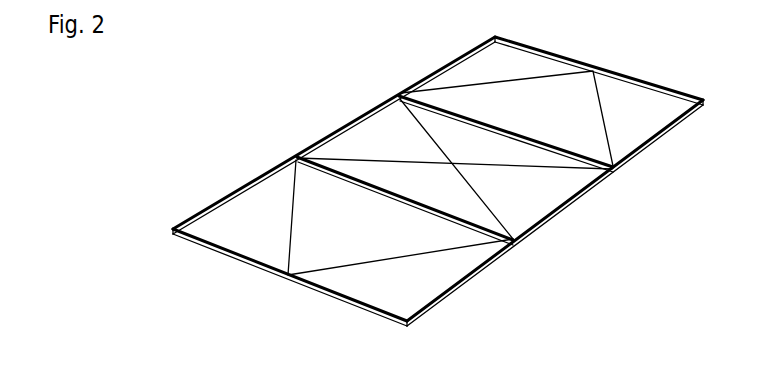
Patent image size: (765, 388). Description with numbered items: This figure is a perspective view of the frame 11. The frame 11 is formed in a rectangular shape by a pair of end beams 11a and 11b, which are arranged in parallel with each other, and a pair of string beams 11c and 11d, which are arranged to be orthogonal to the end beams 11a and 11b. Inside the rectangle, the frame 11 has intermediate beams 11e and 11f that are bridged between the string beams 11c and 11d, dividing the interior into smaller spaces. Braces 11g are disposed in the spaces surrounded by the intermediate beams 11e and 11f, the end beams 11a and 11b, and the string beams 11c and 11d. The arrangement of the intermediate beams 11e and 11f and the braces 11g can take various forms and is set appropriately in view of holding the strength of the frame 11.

The frame 11 is at (250, 172).
The end beam 11a is at (240, 263).
The end beam 11b is at (552, 49).
The string beam 11c is at (344, 121).
The string beam 11d is at (580, 203).
The intermediate beam 11e is at (386, 194).
The intermediate beam 11f is at (513, 131).
The brace 11g is at (497, 82).